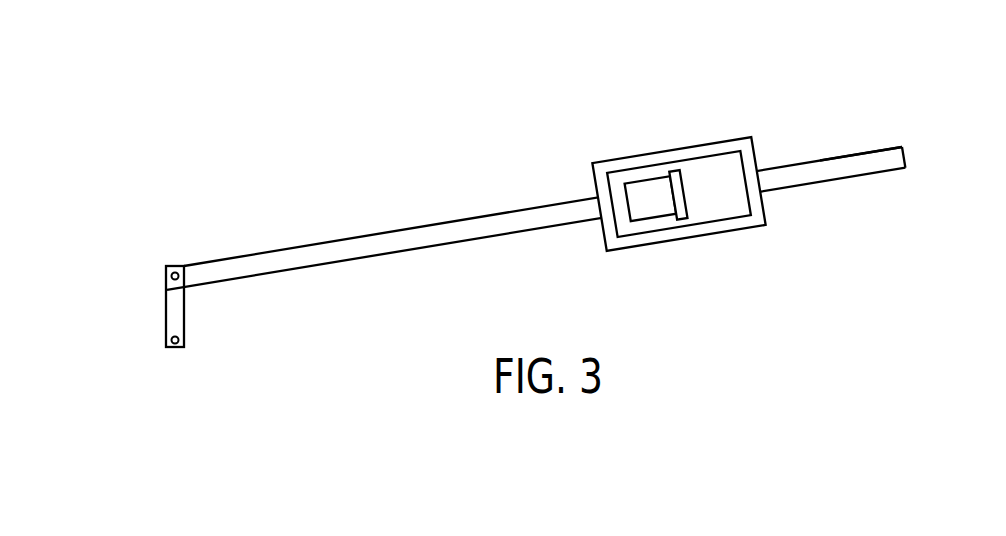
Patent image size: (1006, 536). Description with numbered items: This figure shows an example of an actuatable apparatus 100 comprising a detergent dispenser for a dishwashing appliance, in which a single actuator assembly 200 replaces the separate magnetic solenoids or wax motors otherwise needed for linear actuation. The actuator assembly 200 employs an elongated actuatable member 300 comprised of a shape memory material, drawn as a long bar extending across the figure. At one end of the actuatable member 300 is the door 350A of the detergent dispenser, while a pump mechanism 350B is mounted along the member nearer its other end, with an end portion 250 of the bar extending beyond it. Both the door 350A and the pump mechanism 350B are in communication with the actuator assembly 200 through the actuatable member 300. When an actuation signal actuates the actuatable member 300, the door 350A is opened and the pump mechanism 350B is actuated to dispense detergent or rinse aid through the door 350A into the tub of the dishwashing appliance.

The actuatable apparatus 100 is at (911, 82).
The actuator assembly 200 is at (929, 157).
The bar end portion 250 is at (868, 163).
The actuatable member 300 is at (466, 229).
The door 350A is at (172, 308).
The pump mechanism 350B is at (600, 183).